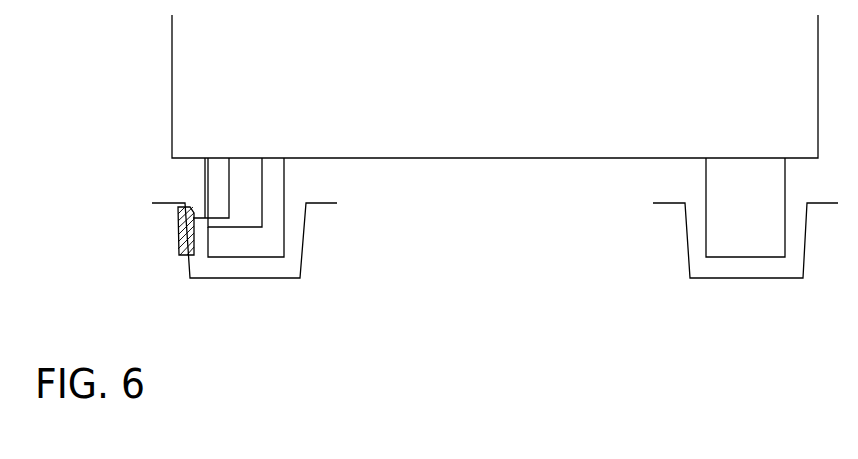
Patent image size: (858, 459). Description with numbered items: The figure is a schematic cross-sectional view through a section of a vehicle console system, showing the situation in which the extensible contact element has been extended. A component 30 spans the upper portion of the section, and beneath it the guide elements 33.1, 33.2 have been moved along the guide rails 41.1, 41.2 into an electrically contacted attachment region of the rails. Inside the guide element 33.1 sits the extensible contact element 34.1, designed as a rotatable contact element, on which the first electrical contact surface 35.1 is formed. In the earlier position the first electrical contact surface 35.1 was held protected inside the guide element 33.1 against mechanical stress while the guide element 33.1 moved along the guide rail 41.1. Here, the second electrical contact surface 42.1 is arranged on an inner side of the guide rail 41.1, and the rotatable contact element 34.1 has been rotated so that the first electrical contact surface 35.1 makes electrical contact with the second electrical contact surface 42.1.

The housing 30 is at (472, 129).
The guide element 33.1 is at (265, 259).
The guide element 33.2 is at (775, 259).
The extensible contact element 34.1 is at (245, 182).
The first electrical contact surface 35.1 is at (197, 225).
The guide rail 41.1 is at (301, 252).
The guide rail 41.2 is at (703, 280).
The second electrical contact surface 42.1 is at (181, 238).